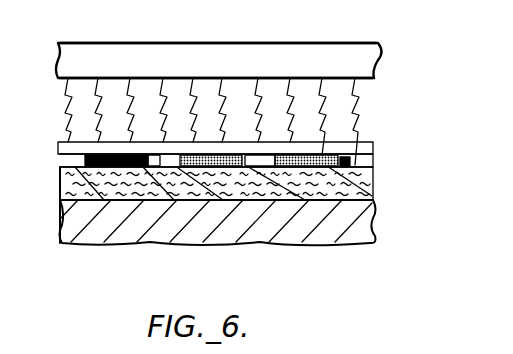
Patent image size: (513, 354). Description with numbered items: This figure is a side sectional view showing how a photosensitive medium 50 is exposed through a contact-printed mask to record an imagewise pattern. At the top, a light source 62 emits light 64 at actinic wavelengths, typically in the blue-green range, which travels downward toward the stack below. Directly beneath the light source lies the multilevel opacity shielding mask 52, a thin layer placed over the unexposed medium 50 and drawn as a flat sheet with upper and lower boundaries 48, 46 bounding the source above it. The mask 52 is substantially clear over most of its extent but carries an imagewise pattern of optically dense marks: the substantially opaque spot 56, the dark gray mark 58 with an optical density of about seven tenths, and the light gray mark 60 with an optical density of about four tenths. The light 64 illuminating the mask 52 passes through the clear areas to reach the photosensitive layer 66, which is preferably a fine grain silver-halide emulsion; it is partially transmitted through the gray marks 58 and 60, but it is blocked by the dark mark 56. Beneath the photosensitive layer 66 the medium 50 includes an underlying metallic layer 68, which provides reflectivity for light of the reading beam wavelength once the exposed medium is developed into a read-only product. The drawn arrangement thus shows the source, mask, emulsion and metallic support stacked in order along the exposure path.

The light source 62 is at (172, 52).
The upper surface of plate 48 is at (188, 53).
The lower surface of plate 46 is at (186, 75).
The light 64 is at (322, 101).
The optically dense mark 58 is at (232, 156).
The optically dense mark 60 is at (325, 146).
The multilevel opacity shielding mask 52 is at (58, 143).
The optically dense mark 56 is at (85, 156).
The photosensitive layer 66 is at (59, 197).
The photosensitive medium 50 is at (47, 206).
The metallic layer 68 is at (120, 233).